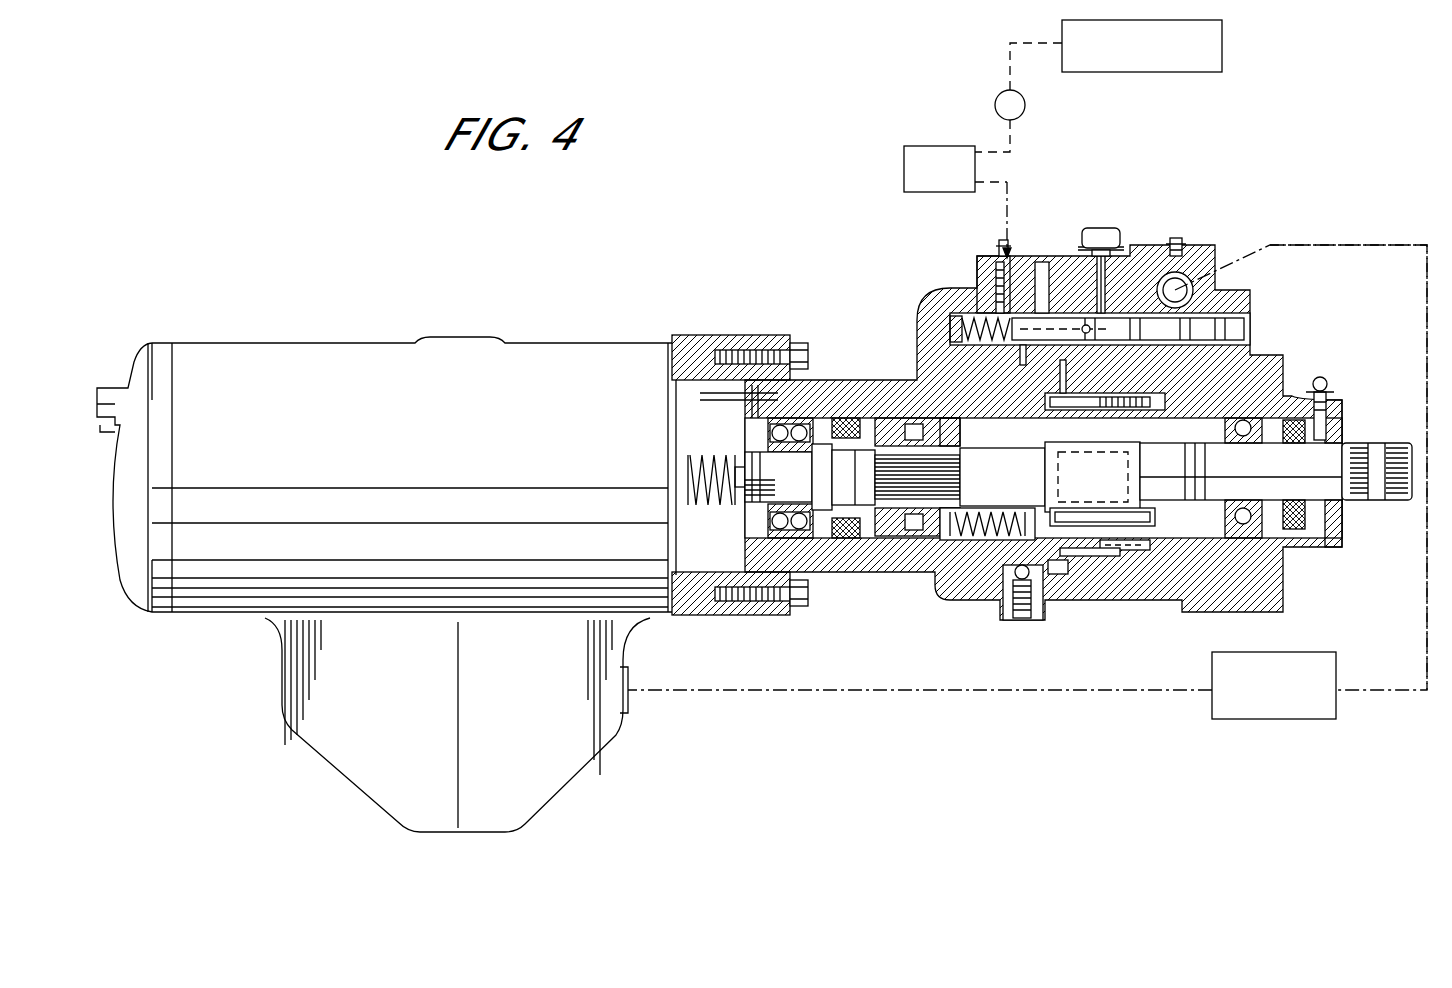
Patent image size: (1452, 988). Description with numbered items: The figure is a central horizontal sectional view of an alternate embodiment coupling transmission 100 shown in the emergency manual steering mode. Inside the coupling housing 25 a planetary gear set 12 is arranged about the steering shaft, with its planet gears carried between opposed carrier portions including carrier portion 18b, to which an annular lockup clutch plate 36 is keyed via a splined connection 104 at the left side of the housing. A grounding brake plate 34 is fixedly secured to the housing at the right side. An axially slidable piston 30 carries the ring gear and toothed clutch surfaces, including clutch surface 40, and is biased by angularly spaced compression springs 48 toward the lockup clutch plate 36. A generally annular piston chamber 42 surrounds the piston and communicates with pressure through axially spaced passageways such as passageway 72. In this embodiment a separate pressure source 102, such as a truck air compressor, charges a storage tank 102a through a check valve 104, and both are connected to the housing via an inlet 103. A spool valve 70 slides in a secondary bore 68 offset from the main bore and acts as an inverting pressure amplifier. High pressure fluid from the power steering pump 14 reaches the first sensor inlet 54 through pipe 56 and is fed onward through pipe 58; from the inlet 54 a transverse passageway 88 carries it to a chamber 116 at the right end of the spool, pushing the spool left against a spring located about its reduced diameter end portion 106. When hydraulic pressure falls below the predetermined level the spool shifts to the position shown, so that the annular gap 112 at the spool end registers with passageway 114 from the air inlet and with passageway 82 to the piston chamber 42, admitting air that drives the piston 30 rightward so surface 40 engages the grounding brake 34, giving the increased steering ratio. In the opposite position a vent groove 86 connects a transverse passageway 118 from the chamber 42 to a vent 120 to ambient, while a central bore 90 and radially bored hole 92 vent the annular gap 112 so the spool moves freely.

The planetary gear set 12 is at (1180, 575).
The power steering pump 14 is at (1293, 720).
The carrier portion 18b is at (935, 540).
The coupling housing 25 is at (1075, 595).
The piston 30 is at (1060, 575).
The grounding brake plate 34 is at (1122, 565).
The lockup clutch plate 36 is at (912, 548).
The toothed clutch surface 40 is at (1142, 565).
The piston chamber 42 is at (990, 565).
The compression springs 48 is at (1000, 520).
The first sensor inlet 54 is at (1190, 274).
The pipe 58 is at (1190, 274).
The pipe 56 is at (1368, 246).
The secondary bore 68 is at (950, 333).
The spool valve 70 is at (1000, 262).
The transversely bored passageway 72 is at (1068, 358).
The transverse passageway 82 is at (1002, 366).
The vent groove 86 is at (1090, 313).
The transverse passageway 88 is at (1195, 300).
The central bore 90 is at (1050, 313).
The radially bored hole 92 is at (1091, 329).
The coupling transmission 100 is at (1323, 200).
The pressure source 102 is at (1210, 50).
The storage tank 102a is at (950, 146).
The inlet 103 is at (1014, 258).
The splined connection / check valve 104 is at (1025, 110).
The reduced diameter end portion 106 is at (978, 300).
The annular gap 112 is at (1024, 348).
The passageway 114 is at (972, 258).
The chamber 116 is at (1146, 256).
The transverse passageway 118 is at (1105, 262).
The vent 120 is at (1080, 232).